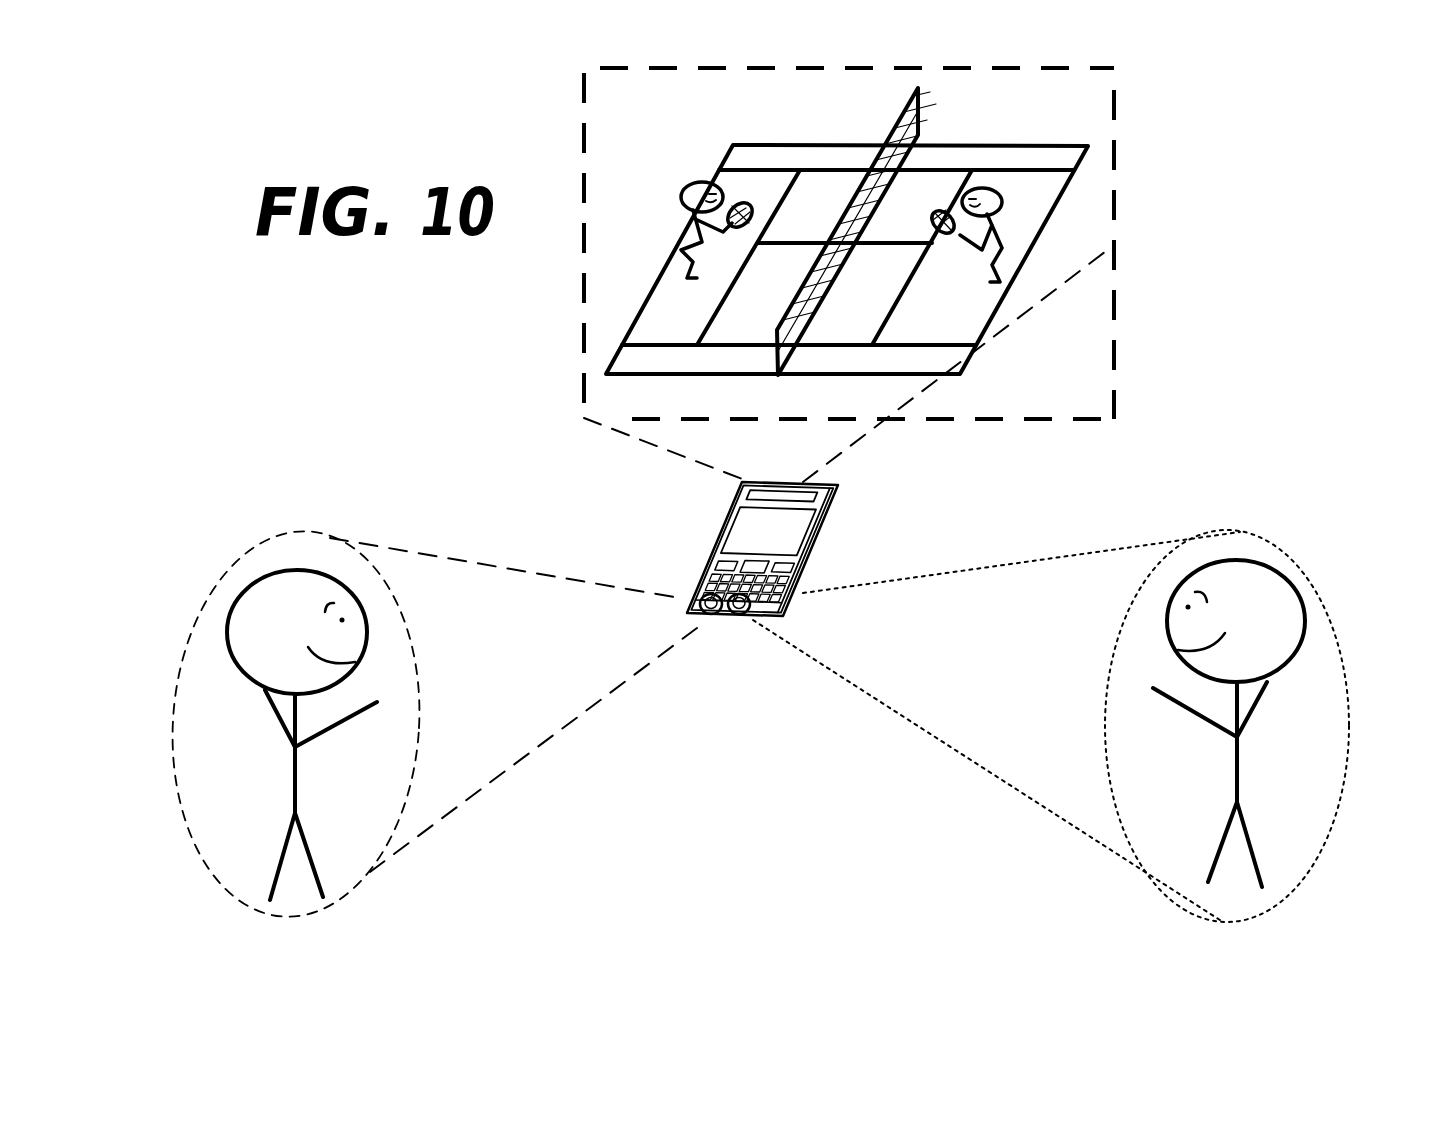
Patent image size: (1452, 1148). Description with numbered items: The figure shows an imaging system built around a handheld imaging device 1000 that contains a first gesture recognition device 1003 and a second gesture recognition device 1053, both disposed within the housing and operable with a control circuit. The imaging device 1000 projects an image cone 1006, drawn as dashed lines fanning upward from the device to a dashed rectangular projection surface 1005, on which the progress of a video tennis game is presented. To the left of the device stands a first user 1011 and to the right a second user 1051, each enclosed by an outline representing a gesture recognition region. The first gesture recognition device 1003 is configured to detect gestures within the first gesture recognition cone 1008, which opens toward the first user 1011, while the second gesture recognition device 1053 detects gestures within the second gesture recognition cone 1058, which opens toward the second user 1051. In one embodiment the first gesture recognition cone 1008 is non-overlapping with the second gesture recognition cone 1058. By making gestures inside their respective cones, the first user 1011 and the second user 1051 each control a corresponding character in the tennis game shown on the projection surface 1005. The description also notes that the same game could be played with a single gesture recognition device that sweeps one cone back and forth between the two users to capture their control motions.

The imaging device 1000 is at (683, 552).
The first gesture recognition device 1003 is at (717, 617).
The second gesture recognition device 1053 is at (733, 617).
The projection surface 1005 is at (1250, 142).
The image cone 1006 is at (860, 438).
The first gesture recognition cone 1008 is at (442, 556).
The second gesture recognition cone 1058 is at (1042, 807).
The first user 1011 is at (285, 730).
The second user 1051 is at (1263, 688).